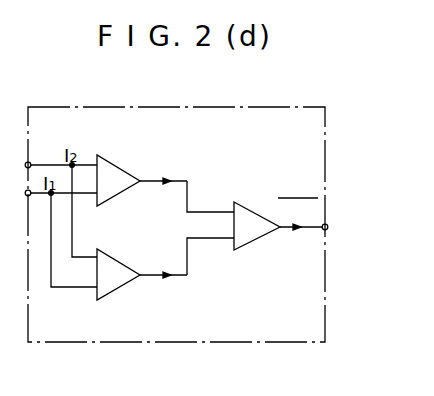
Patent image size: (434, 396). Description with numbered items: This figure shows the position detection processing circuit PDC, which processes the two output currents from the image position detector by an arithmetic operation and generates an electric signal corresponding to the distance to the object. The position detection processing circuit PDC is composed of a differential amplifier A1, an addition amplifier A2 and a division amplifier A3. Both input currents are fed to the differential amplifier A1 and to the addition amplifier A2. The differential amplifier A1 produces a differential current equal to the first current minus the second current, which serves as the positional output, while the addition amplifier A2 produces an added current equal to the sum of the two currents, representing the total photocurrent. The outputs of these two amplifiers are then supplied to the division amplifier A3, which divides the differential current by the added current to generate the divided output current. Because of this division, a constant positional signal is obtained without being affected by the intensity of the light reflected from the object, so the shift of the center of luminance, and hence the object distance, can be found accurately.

The differential amplifier A1 is at (120, 194).
The addition amplifier A2 is at (117, 289).
The division amplifier A3 is at (254, 243).
The position detection processing circuit PDC is at (197, 342).